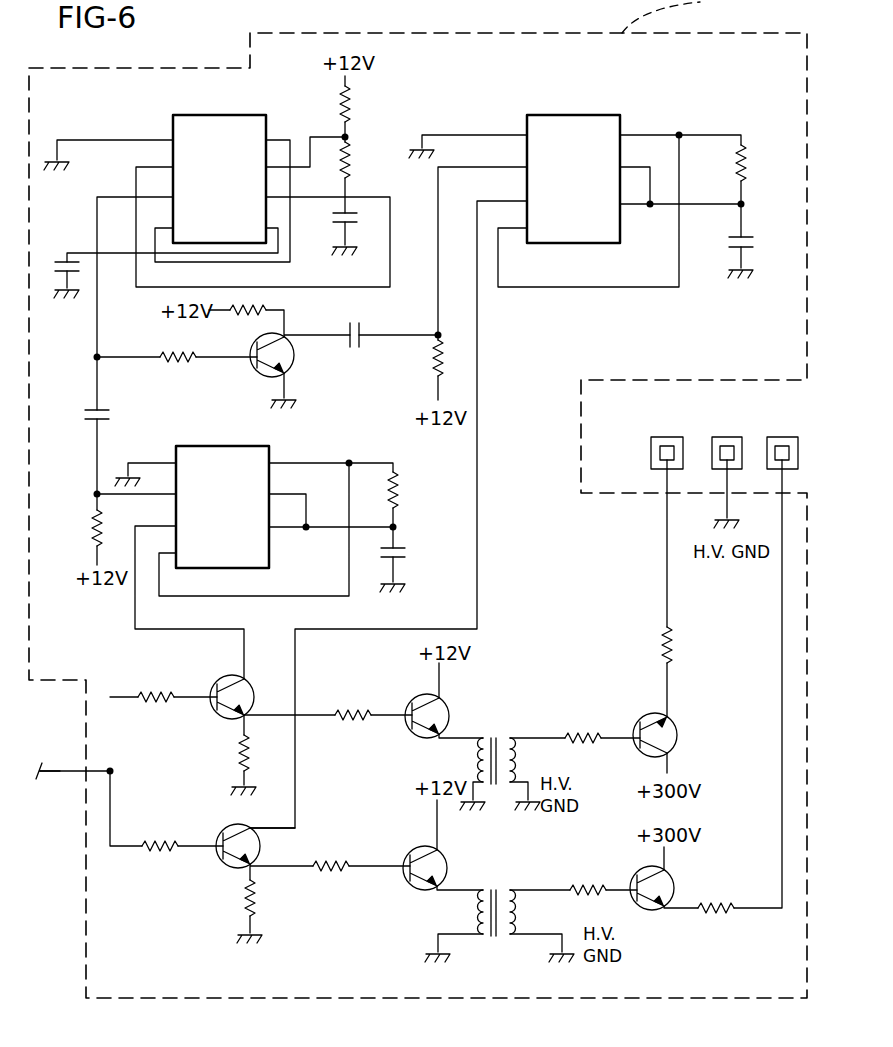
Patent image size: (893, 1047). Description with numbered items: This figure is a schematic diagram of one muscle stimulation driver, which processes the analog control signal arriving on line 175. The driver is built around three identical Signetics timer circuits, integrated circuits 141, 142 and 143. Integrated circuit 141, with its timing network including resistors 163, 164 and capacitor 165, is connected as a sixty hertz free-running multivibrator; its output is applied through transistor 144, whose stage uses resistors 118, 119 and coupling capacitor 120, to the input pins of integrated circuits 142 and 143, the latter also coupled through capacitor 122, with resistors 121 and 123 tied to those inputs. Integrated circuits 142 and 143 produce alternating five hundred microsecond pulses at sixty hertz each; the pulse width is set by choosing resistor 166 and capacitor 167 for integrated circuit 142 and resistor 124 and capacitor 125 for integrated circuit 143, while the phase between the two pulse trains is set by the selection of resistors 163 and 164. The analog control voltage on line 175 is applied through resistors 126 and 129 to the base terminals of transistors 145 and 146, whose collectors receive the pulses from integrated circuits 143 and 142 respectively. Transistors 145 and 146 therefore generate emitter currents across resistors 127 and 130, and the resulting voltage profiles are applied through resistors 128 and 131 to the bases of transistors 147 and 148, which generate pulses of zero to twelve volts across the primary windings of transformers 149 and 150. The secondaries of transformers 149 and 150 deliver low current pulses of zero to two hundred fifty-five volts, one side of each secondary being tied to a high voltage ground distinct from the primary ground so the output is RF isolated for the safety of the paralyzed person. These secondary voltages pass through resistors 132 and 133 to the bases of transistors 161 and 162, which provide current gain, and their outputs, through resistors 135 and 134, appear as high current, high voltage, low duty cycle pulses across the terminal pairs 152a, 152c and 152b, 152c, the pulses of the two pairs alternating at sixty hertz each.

The resistor 118 is at (248, 314).
The resistor 119 is at (166, 350).
The capacitor 120 is at (350, 321).
The resistor 121 is at (433, 366).
The capacitor 122 is at (110, 414).
The resistor 123 is at (94, 516).
The resistor 124 is at (400, 481).
The capacitor 125 is at (419, 541).
The resistor 126 is at (156, 690).
The resistor 127 is at (238, 750).
The resistor 128 is at (352, 708).
The resistor 129 is at (158, 840).
The resistor 130 is at (242, 897).
The resistor 131 is at (340, 861).
The resistor 132 is at (586, 731).
The resistor 133 is at (596, 883).
The resistor 134 is at (720, 914).
The resistor 135 is at (662, 649).
The integrated circuit 141 is at (222, 115).
The integrated circuit 142 is at (546, 115).
The integrated circuit 143 is at (232, 446).
The transistor 144 is at (292, 376).
The transistor 145 is at (250, 678).
The transistor 146 is at (228, 829).
The transistor 147 is at (418, 695).
The transistor 148 is at (446, 862).
The transformer 149 is at (493, 726).
The transformer 150 is at (497, 880).
The terminal 152a is at (664, 436).
The terminal 152b is at (782, 437).
The terminal 152c is at (727, 437).
The transistor 161 is at (678, 729).
The transistor 162 is at (678, 883).
The resistor 163 is at (353, 99).
The resistor 164 is at (350, 154).
The capacitor 165 is at (358, 220).
The resistor 166 is at (745, 153).
The capacitor 167 is at (756, 250).
The line 175 is at (56, 770).